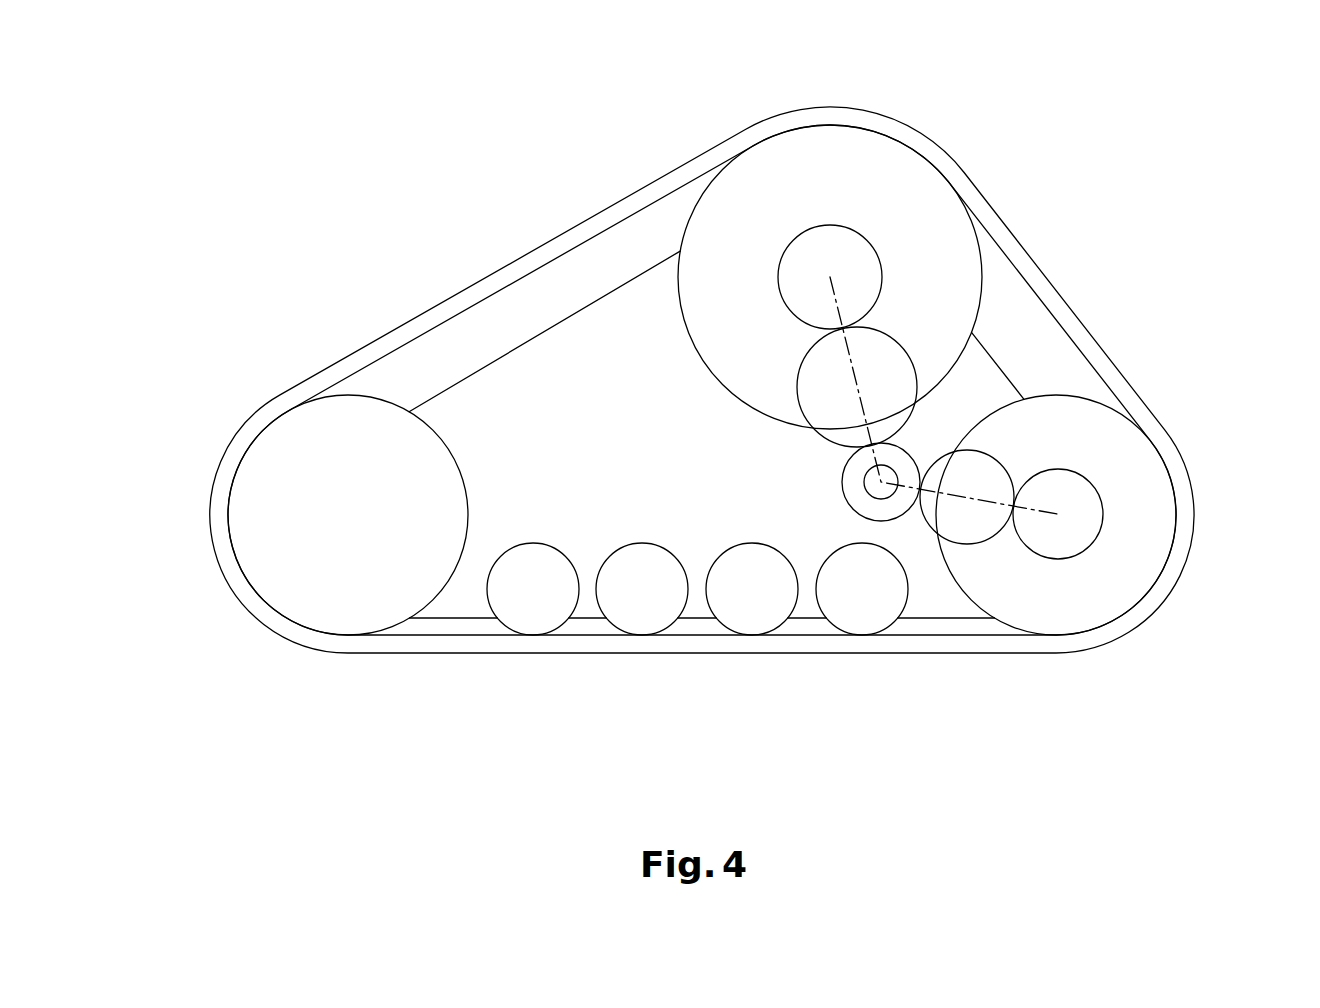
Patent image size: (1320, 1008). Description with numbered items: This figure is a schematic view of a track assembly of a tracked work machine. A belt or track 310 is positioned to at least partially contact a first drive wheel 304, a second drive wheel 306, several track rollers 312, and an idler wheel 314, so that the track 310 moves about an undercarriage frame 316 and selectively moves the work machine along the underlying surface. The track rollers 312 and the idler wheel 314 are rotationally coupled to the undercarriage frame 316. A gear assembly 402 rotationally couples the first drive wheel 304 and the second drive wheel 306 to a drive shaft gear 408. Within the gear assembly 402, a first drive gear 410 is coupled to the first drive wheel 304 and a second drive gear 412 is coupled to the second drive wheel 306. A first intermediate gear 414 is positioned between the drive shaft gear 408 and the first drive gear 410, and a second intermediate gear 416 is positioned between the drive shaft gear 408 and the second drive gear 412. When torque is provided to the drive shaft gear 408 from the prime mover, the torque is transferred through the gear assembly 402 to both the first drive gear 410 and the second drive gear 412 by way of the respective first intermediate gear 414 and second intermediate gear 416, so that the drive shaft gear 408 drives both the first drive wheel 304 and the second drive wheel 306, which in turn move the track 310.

The first drive wheel 304 is at (833, 157).
The second drive wheel 306 is at (1148, 565).
The track 310 is at (533, 250).
The track rollers 312 is at (853, 612).
The idler wheel 314 is at (253, 517).
The undercarriage frame 316 is at (477, 402).
The gear assembly 402 is at (757, 472).
The drive shaft gear 408 is at (903, 460).
The first drive gear 410 is at (810, 250).
The second drive gear 412 is at (1072, 488).
The first intermediate gear 414 is at (887, 352).
The second intermediate gear 416 is at (992, 475).